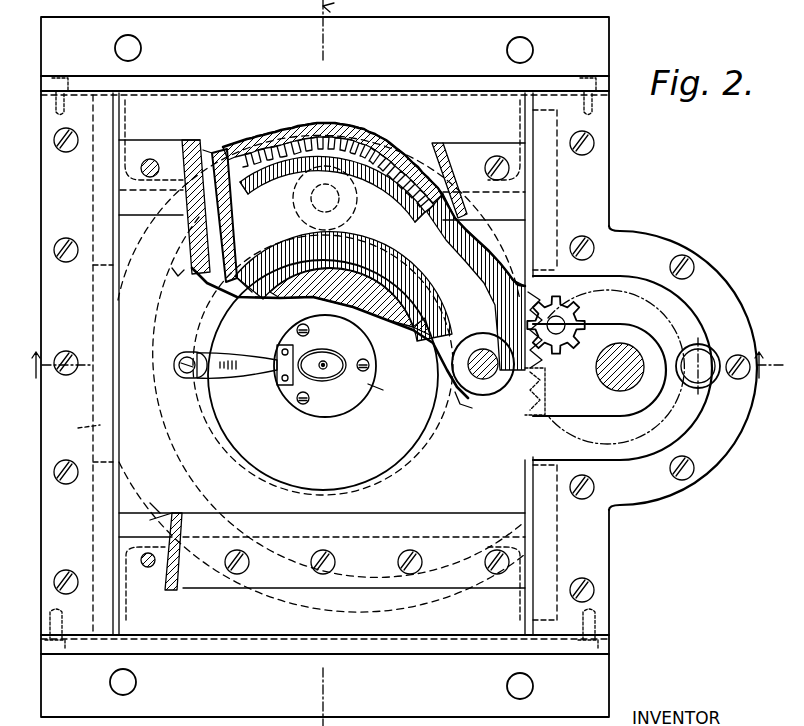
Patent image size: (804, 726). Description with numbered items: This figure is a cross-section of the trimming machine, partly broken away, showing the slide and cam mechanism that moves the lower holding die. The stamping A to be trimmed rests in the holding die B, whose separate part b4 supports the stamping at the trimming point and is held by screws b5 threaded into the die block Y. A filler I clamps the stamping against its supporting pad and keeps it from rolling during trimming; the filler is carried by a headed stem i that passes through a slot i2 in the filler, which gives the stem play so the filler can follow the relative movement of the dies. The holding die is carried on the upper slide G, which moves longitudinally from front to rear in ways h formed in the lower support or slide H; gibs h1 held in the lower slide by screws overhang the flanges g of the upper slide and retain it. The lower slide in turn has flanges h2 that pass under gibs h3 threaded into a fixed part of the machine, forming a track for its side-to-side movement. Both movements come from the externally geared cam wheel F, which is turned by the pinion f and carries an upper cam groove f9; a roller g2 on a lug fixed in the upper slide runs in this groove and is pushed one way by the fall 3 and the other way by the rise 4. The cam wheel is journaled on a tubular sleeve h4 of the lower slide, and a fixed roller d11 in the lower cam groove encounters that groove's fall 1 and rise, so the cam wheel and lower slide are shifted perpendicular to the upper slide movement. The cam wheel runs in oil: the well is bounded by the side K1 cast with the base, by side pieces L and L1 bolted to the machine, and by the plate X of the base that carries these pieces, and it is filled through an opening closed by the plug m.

The plate X is at (325, 367).
The side piece L is at (426, 80).
The side piece L1 is at (376, 652).
The fall 1 is at (400, 363).
The lower support or slide H is at (324, 364).
The ways h is at (232, 208).
The gibs h1 is at (158, 174).
The flanges h2 is at (75, 420).
The gibs h3 is at (316, 577).
The tubular sleeve h4 is at (421, 318).
The upper slide G is at (321, 373).
The flanges g is at (163, 391).
The roller g2 is at (480, 326).
The cam wheel F is at (566, 294).
The pinion f is at (545, 365).
The upper cam groove f9 is at (405, 233).
The roller d11 is at (342, 198).
The fall 3 is at (238, 265).
The rise 4 is at (360, 232).
The stamping A is at (225, 355).
The headed stem i is at (327, 362).
The slot i2 is at (320, 358).
The filler I is at (316, 372).
The separate part b4 is at (384, 388).
The screws b5 is at (298, 403).
The holding die B is at (350, 414).
The die block Y is at (323, 375).
The side K1 is at (645, 368).
The plug m is at (708, 356).